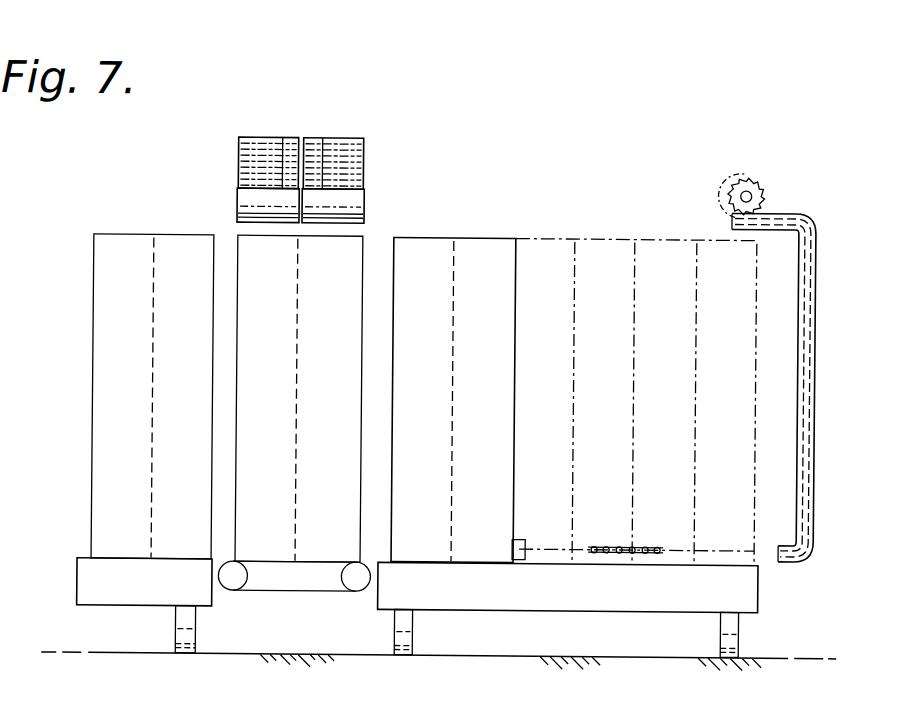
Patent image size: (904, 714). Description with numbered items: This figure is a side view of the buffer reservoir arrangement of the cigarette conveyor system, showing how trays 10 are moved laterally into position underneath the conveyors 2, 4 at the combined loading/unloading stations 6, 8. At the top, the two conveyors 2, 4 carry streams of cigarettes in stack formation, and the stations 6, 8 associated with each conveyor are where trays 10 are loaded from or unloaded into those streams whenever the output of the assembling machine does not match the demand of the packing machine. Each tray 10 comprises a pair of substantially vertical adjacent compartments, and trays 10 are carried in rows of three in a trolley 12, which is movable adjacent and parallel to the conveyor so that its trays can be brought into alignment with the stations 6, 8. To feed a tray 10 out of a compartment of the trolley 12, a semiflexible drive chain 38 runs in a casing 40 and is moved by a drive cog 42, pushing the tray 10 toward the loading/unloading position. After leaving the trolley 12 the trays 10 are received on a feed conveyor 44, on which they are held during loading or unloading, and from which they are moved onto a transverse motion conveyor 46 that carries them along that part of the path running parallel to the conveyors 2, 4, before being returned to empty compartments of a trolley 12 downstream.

The conveyor 2 is at (356, 202).
The conveyor 4 is at (252, 197).
The combined loading/unloading station 6 is at (376, 208).
The combined loading/unloading station 8 is at (230, 196).
The tray 10 is at (242, 250).
The trolley 12 is at (749, 590).
The semiflexible drive chain 38 is at (636, 547).
The casing 40 is at (814, 331).
The drive cog 42 is at (760, 197).
The feed conveyor 44 is at (314, 594).
The transverse motion conveyor 46 is at (91, 592).